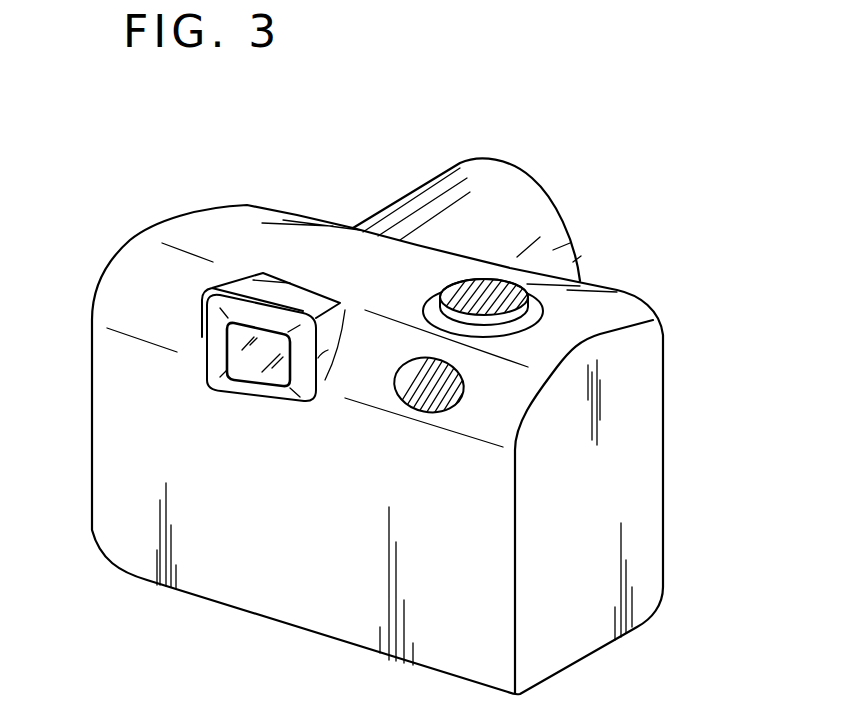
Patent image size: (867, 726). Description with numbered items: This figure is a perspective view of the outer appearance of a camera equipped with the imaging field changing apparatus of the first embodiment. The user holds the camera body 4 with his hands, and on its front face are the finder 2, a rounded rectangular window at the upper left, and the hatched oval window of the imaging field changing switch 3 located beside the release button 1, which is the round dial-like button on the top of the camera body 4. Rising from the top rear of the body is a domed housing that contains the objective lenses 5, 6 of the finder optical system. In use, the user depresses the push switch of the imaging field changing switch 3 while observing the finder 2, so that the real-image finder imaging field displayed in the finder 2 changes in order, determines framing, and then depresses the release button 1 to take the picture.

The release button 1 is at (502, 283).
The finder 2 is at (243, 367).
The imaging field changing switch 3 is at (463, 396).
The camera body 4 is at (663, 381).
The objective lens 5 is at (467, 192).
The objective lens 6 is at (480, 190).